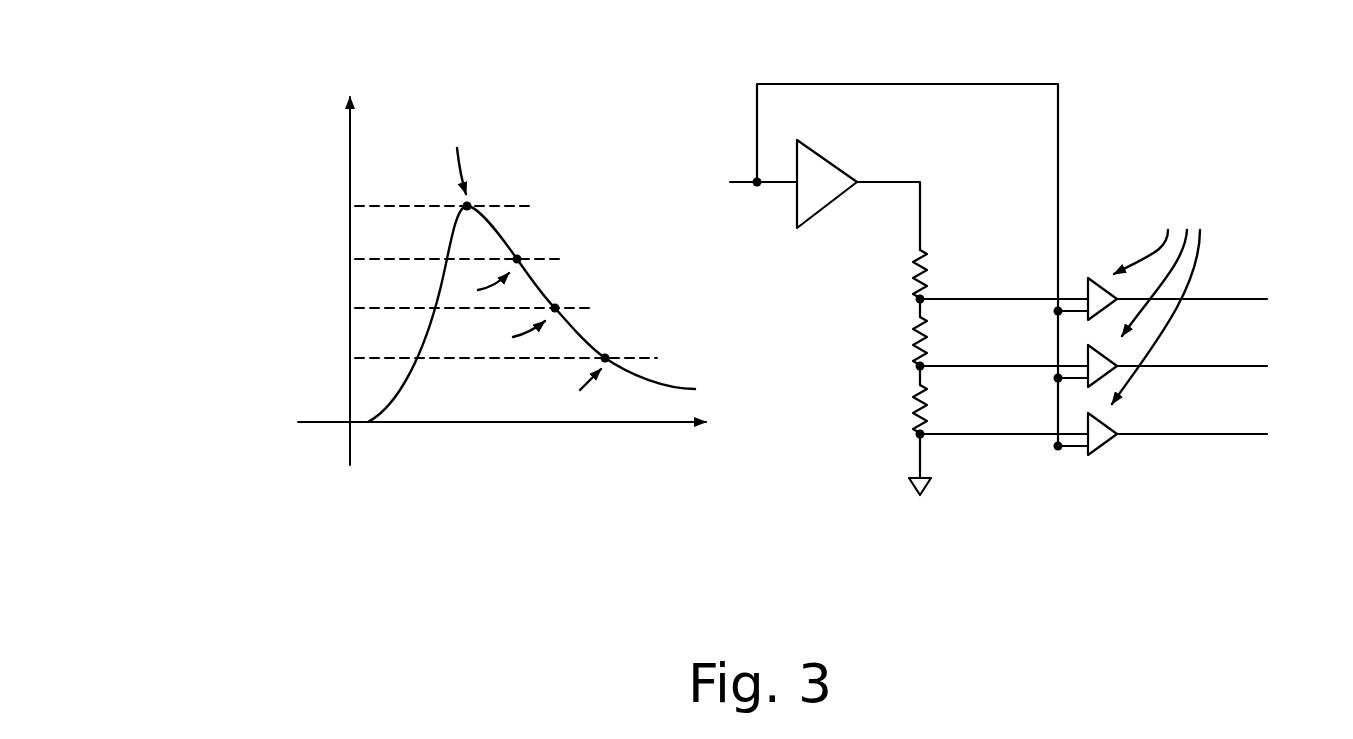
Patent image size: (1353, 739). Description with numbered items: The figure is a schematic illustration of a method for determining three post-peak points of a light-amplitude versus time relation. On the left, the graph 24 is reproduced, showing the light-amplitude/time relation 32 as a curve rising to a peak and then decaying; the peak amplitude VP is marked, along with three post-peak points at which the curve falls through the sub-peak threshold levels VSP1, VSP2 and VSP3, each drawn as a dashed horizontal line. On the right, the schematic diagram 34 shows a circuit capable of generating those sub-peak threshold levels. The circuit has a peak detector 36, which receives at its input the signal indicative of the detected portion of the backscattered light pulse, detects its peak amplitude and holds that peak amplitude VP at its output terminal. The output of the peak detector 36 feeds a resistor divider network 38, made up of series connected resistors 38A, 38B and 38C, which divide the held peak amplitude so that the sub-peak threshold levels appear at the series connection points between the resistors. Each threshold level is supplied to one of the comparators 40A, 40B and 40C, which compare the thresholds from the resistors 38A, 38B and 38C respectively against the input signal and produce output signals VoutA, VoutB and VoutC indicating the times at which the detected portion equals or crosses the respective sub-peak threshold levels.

The graph 24 is at (548, 141).
The light-amplitude/time relation 32 is at (427, 338).
The schematic diagram 34 is at (1098, 107).
The peak detector 36 is at (834, 196).
The resistor divider network 38 is at (886, 446).
The series connected resistor 38A is at (896, 274).
The series connected resistor 38B is at (896, 337).
The series connected resistor 38C is at (896, 407).
The comparator 40A is at (1092, 276).
The comparator 40B is at (1098, 384).
The comparator 40C is at (1100, 452).